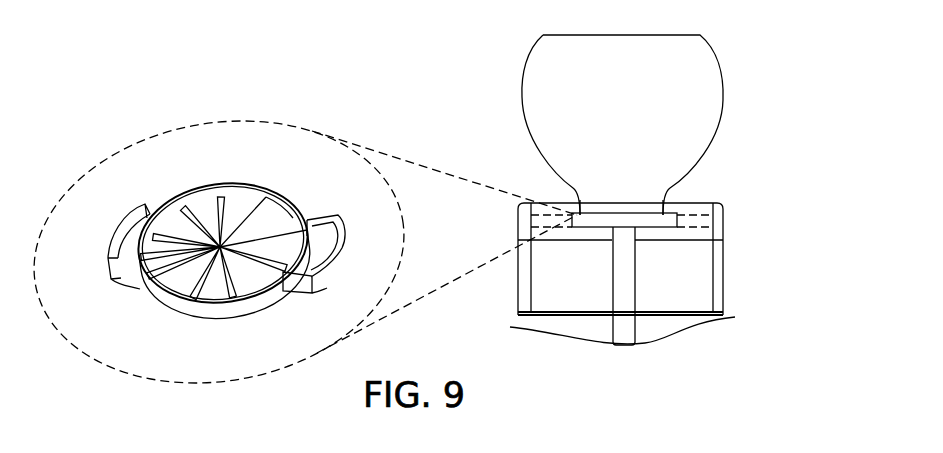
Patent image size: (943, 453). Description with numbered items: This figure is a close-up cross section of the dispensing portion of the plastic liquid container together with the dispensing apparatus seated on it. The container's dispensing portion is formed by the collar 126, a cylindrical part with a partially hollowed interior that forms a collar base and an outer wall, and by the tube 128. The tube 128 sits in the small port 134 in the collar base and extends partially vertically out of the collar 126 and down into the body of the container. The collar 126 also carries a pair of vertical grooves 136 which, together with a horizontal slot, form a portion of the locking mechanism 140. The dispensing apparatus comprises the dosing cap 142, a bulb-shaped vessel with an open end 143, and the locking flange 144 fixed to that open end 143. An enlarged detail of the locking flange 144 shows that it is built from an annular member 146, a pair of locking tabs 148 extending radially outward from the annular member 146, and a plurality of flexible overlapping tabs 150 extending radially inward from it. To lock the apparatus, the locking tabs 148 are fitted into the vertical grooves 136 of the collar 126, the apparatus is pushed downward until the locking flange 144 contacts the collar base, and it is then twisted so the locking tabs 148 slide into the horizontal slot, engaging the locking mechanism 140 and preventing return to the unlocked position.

The collar 126 is at (518, 285).
The tube 128 is at (633, 280).
The port 134 is at (613, 330).
The vertical grooves 136 is at (532, 268).
The locking mechanism 140 is at (697, 330).
The dosing cap 142 is at (713, 150).
The open end 143 is at (578, 197).
The locking flange 144 is at (222, 313).
The annular member 146 is at (247, 184).
The locking tabs 148 is at (108, 268).
The flexible overlapping tabs 150 is at (216, 243).